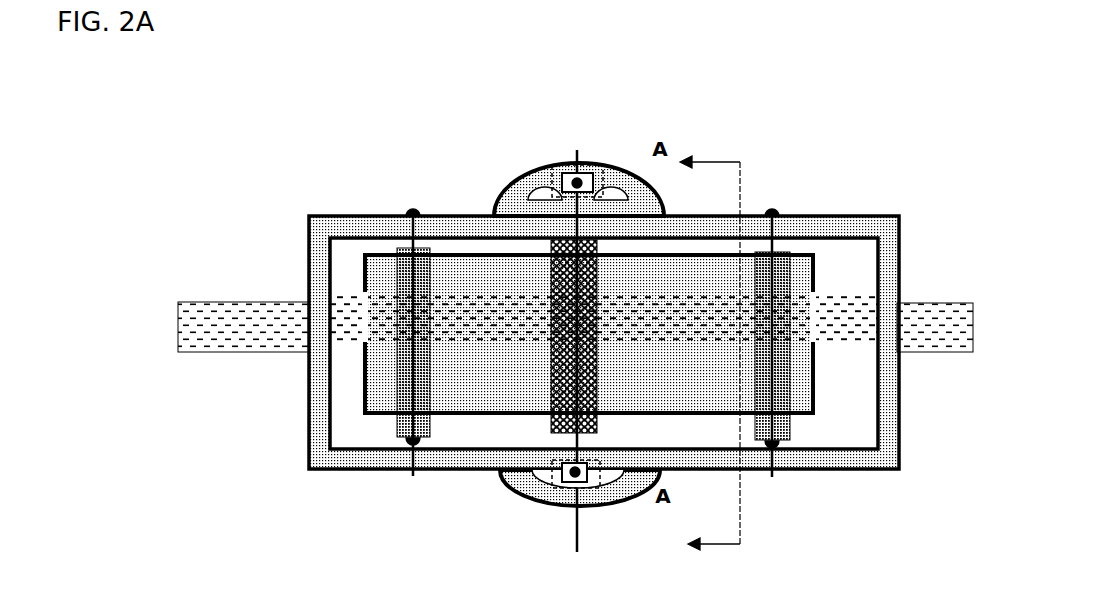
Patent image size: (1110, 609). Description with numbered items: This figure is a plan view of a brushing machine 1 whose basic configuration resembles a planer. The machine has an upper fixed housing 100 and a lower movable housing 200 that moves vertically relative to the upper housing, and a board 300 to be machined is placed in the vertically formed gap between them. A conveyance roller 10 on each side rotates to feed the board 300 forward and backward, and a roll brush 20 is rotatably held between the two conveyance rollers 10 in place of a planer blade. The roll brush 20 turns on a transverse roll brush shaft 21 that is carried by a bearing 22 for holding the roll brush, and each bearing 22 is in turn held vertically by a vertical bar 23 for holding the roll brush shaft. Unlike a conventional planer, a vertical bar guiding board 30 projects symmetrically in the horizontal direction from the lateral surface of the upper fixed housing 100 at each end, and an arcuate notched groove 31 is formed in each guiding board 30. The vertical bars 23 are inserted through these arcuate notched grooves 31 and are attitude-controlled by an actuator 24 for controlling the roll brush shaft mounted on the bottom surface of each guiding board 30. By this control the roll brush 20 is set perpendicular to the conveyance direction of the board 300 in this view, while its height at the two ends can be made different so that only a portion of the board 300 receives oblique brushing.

The brushing machine 1 is at (552, 303).
The conveyance roller 10 is at (544, 283).
The roll brush 20 is at (457, 287).
The roll brush shaft 21 is at (558, 169).
The bearing for holding roll brush 22 is at (522, 530).
The vertical bar for holding roll brush shaft 23 is at (582, 534).
The actuator for controlling roll brush shaft 24 is at (628, 524).
The vertical bar guiding board 30 is at (579, 143).
The arcuate notched groove 31 is at (605, 126).
The upper fixed housing 100 is at (612, 305).
The lower movable housing 200 is at (604, 384).
The board 300 is at (538, 288).